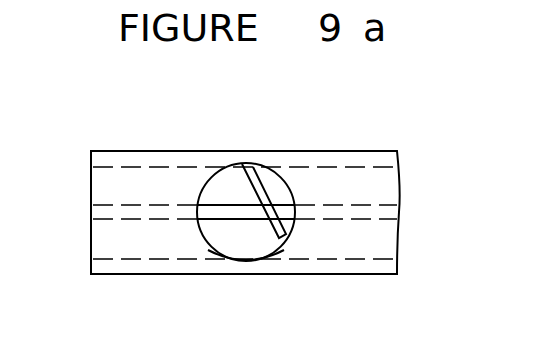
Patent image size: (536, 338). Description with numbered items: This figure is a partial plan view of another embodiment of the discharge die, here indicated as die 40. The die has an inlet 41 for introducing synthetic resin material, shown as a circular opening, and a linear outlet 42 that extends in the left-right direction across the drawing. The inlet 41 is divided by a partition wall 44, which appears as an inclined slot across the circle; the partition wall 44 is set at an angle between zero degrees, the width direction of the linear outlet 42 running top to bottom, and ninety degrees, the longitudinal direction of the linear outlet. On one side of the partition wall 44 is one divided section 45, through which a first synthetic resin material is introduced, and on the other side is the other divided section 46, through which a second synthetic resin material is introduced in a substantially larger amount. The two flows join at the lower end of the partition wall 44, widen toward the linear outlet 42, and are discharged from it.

The tape strip 40 is at (112, 150).
The inlet 41 is at (205, 180).
The linear outlet 42 is at (108, 212).
The partition wall 44 is at (267, 186).
The divided section 45 is at (278, 197).
The divided section 46 is at (238, 240).